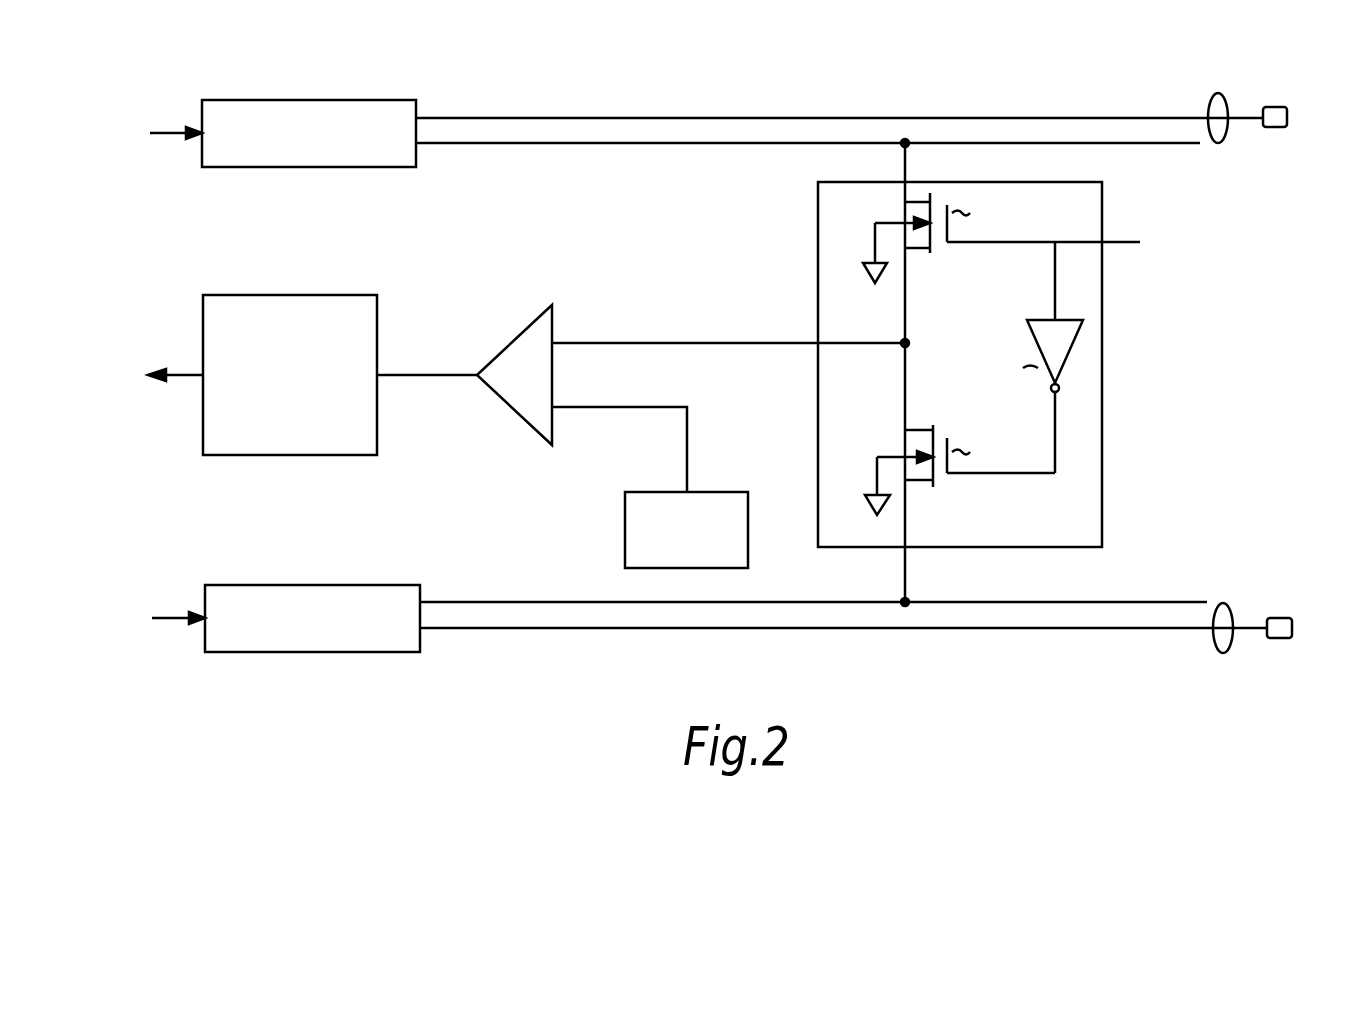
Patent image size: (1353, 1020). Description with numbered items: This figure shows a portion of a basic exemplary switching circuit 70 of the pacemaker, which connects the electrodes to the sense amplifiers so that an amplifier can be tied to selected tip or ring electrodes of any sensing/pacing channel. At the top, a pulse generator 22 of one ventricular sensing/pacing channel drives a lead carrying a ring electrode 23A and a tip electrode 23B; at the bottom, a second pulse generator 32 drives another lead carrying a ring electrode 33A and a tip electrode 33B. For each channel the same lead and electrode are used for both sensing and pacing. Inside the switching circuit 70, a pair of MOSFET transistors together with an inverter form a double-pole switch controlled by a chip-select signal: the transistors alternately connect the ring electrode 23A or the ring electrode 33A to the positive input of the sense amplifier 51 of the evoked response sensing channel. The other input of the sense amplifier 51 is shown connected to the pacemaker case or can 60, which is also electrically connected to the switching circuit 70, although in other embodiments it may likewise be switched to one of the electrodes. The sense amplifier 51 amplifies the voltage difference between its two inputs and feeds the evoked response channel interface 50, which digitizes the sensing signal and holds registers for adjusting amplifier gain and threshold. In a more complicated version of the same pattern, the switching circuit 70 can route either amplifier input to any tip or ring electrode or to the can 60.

The pulse generator 22 is at (380, 100).
The ring electrode 23A is at (1165, 143).
The tip electrode 23B is at (1290, 107).
The pulse generator 32 is at (382, 585).
The ring electrode 33A is at (1167, 602).
The tip electrode 33B is at (1290, 618).
The evoked response channel interface 50 is at (333, 295).
The sense amplifier 51 is at (496, 352).
The can 60 is at (750, 530).
The switching circuit 70 is at (818, 213).